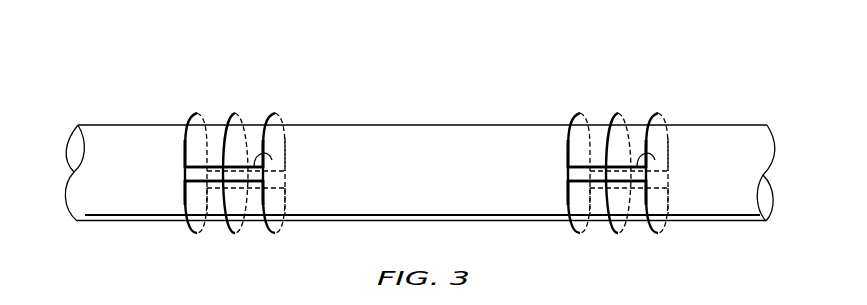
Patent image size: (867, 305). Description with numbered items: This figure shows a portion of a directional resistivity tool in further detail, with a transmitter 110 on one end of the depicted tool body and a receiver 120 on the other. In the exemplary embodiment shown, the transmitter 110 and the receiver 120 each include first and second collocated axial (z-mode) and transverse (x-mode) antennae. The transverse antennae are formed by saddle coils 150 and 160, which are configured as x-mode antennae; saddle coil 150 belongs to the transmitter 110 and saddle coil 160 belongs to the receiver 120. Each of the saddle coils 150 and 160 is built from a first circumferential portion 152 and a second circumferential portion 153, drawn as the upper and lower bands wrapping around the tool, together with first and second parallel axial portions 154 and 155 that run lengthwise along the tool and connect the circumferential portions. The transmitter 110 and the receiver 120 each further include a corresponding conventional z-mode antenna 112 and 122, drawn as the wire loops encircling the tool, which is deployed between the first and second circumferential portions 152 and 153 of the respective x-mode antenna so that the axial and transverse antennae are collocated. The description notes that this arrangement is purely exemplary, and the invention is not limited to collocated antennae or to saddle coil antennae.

The transmitter 110 is at (283, 73).
The z-mode antenna 112 is at (238, 116).
The receiver 120 is at (605, 139).
The z-mode antenna 122 is at (618, 151).
The saddle coil 150 is at (185, 196).
The saddle coil 160 is at (574, 196).
The first circumferential portion 152 is at (185, 142).
The second circumferential portion 153 is at (263, 138).
The first axial portion 154 is at (197, 182).
The second axial portion 155 is at (272, 160).